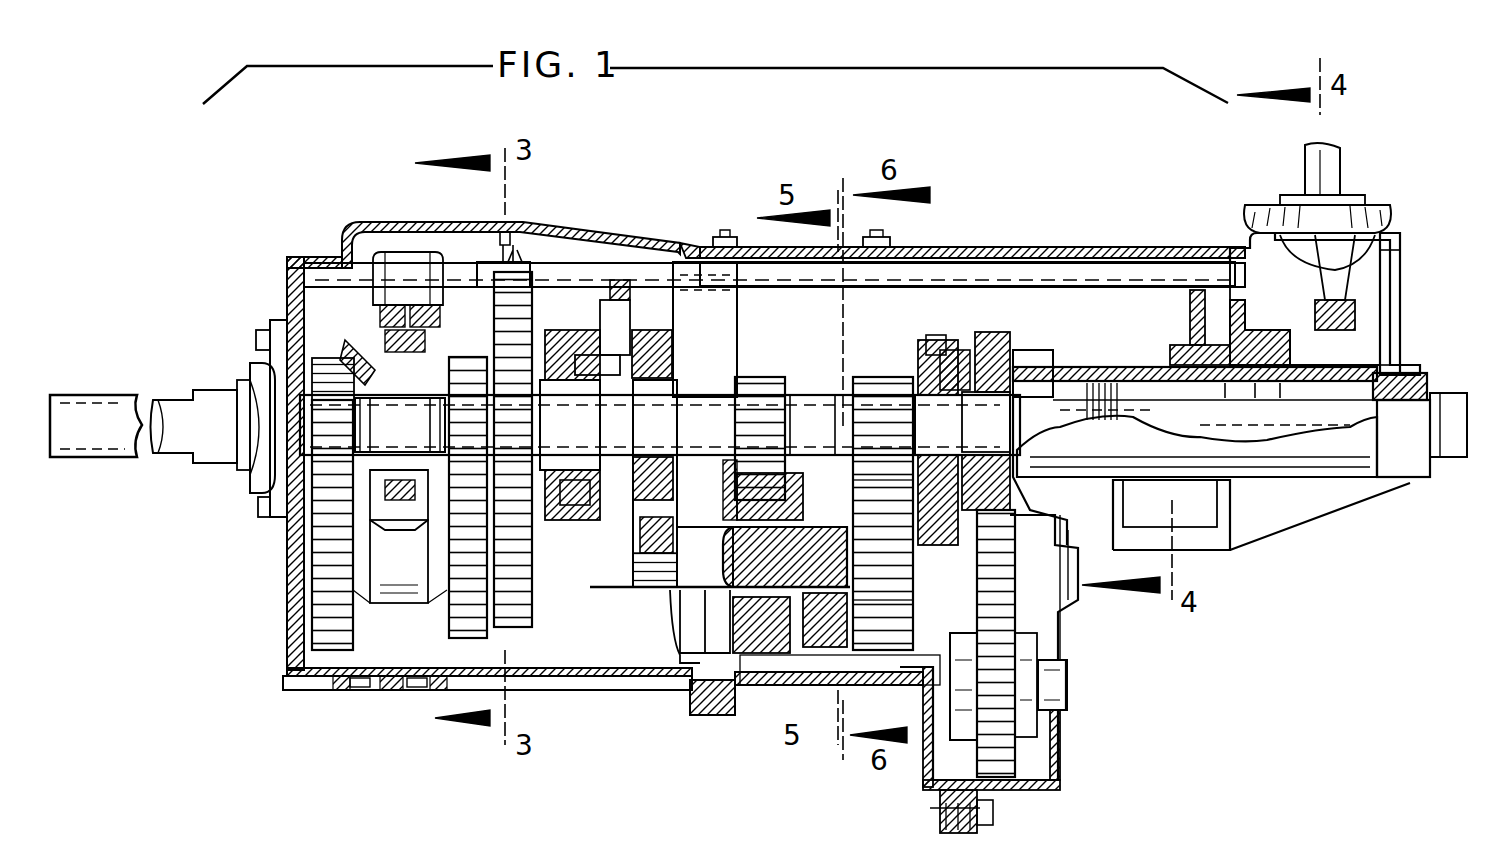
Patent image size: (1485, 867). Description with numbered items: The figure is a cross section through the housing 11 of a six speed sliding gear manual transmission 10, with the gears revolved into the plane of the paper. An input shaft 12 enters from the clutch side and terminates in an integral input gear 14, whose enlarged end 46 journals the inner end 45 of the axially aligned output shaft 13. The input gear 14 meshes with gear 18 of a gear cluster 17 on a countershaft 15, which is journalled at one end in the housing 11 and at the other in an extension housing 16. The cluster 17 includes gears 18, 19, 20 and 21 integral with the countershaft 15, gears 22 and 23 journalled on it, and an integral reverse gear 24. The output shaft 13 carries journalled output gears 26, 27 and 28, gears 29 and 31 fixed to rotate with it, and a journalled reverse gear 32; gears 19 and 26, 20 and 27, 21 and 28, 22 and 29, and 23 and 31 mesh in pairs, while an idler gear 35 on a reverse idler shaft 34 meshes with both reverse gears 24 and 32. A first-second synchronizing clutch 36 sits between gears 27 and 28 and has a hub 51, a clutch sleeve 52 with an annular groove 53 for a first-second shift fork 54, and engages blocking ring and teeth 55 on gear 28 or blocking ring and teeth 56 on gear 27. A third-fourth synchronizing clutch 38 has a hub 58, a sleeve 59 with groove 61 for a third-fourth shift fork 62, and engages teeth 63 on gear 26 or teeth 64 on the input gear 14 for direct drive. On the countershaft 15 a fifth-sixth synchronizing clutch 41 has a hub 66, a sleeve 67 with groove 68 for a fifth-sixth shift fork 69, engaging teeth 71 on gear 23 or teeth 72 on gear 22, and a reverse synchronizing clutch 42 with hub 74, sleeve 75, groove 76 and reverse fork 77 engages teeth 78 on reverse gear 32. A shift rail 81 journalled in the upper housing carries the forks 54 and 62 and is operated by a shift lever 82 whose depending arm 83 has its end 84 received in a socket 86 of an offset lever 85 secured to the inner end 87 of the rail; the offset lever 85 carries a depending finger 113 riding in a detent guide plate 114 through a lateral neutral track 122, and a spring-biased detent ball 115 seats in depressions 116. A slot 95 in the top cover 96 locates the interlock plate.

The manual transmission 10 is at (693, 178).
The housing 11 is at (641, 690).
The input shaft 12 is at (128, 395).
The output shaft 13 is at (1145, 405).
The input gear 14 is at (270, 330).
The countershaft 15 is at (655, 600).
The extension housing 16 is at (1072, 605).
The gear cluster 17 is at (466, 662).
The gear 18 is at (312, 566).
The gear 19 is at (448, 610).
The gear 20 is at (528, 605).
The gear 21 is at (655, 585).
The sixth gear 22 is at (735, 690).
The fifth gear 23 is at (900, 662).
The reverse gear 24 is at (1000, 568).
The third gear 26 is at (465, 405).
The second gear 27 is at (535, 428).
The first gear 28 is at (670, 362).
The gear 29 is at (760, 378).
The gear 31 is at (893, 377).
The reverse gear 32 is at (1007, 340).
The reverse idler shaft 34 is at (1068, 680).
The idler gear 35 is at (1025, 757).
The 1-2 synchronizing clutch 36 is at (622, 510).
The 3-4 synchronizing clutch 38 is at (360, 335).
The 5-6 synchronizing clutch 41 is at (809, 634).
The reverse gear synchronizing clutch 42 is at (950, 340).
The inner end of output shaft 45 is at (253, 450).
The enlarged end of input shaft 46 is at (262, 478).
The hub 51 is at (583, 380).
The clutch sleeve 52 is at (572, 526).
The annular groove 53 is at (600, 520).
The 1-2 shift fork 54 is at (585, 300).
The blocking ring and teeth 55 is at (627, 300).
The blocking ring and teeth 56 is at (580, 345).
The hub 58 is at (400, 425).
The clutch sleeve 59 is at (400, 510).
The annular groove 61 is at (400, 561).
The 3-4 shift fork 62 is at (405, 305).
The blocking ring and teeth 63 is at (448, 358).
The blocking ring and teeth 64 is at (358, 362).
The hub 66 is at (785, 557).
The clutch sleeve 67 is at (850, 625).
The annular groove 68 is at (798, 647).
The 5-6 shift fork 69 is at (800, 455).
The blocking ring and teeth 71 is at (865, 506).
The blocking ring and teeth 72 is at (738, 510).
The hub 74 is at (962, 425).
The clutch sleeve 75 is at (925, 362).
The annular groove 76 is at (938, 335).
The reverse fork 77 is at (935, 560).
The blocking ring and teeth 78 is at (968, 345).
The shift rail 81 is at (815, 280).
The shift lever 82 is at (1335, 172).
The depending arm 83 is at (1400, 272).
The end of depending arm 84 is at (1348, 300).
The offset lever 85 is at (1248, 305).
The socket 86 is at (1355, 320).
The inner end of shift rail 87 is at (1140, 262).
The slot 95 is at (512, 236).
The top cover 96 is at (436, 222).
The depending finger 113 is at (1258, 383).
The detent guide plate 114 is at (1222, 383).
The detent ball 115 is at (1188, 340).
The depressions 116 is at (1185, 405).
The lateral neutral track 122 is at (1282, 383).